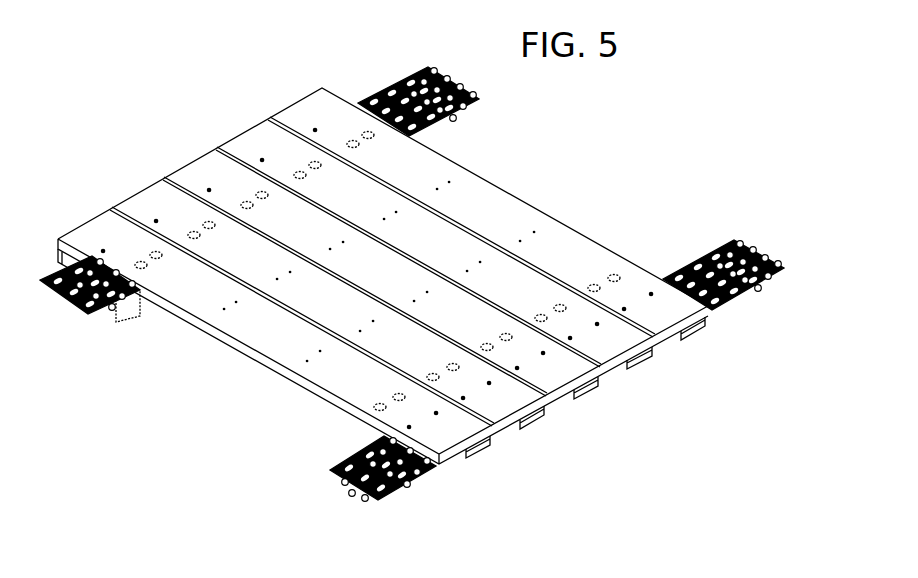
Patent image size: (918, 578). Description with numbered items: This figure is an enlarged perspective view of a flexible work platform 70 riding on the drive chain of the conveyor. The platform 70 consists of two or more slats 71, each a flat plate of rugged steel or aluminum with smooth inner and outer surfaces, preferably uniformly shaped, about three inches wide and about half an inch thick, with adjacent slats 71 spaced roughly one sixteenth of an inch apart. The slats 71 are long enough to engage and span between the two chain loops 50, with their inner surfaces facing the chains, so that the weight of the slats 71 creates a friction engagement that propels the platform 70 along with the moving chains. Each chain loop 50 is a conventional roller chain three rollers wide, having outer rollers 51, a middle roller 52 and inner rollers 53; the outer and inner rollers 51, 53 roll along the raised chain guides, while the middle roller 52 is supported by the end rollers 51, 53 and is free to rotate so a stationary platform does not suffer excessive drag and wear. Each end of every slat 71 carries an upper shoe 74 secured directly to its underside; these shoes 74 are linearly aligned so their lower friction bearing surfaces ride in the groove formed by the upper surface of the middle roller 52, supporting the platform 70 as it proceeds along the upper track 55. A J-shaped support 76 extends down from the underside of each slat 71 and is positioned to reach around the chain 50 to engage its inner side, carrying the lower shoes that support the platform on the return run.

The flexible work platform 70 is at (444, 153).
The slat 71 is at (523, 213).
The upper shoe 74 is at (78, 256).
The J-shaped support 76 is at (124, 317).
The chain loop 50 is at (412, 322).
The upper track 55 is at (332, 462).
The inner roller 53 is at (340, 482).
The middle roller 52 is at (348, 498).
The outer roller 51 is at (365, 500).